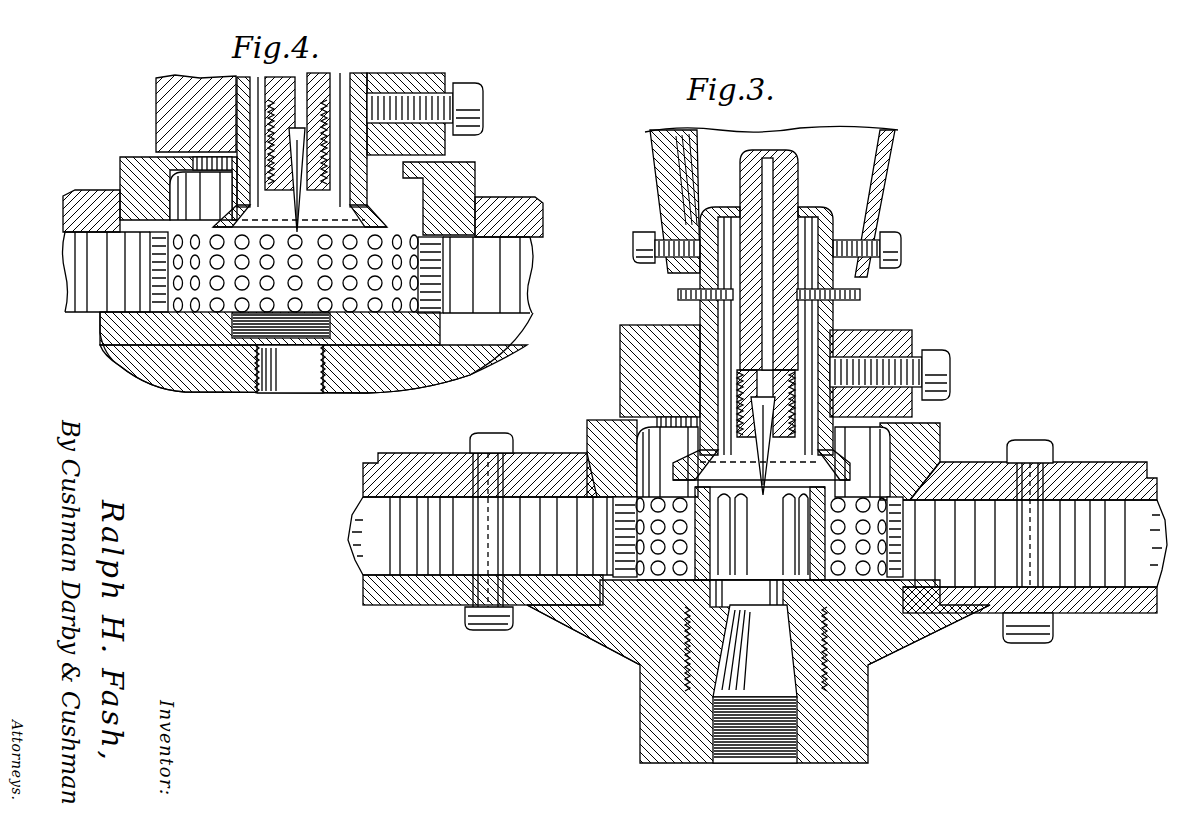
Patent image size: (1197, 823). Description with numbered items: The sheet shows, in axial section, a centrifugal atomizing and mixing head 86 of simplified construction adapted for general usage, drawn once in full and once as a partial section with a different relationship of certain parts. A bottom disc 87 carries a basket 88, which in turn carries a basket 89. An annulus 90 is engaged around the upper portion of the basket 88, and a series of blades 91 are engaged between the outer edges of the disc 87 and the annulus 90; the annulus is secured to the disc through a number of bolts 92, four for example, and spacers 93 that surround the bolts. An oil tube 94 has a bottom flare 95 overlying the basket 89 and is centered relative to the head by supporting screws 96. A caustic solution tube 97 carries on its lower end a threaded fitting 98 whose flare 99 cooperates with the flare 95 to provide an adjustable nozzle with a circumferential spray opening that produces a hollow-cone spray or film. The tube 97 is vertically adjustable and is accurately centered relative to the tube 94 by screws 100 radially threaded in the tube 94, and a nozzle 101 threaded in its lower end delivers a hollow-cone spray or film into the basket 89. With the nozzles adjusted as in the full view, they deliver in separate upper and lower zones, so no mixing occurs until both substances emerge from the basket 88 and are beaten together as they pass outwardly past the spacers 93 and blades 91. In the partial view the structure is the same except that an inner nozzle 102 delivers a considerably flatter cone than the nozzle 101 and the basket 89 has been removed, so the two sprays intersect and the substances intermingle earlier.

In FIG. 4, the head 86 is at (170, 388).
In FIG. 3, the head 86 is at (922, 655).
In FIG. 4, the bottom disc 87 is at (133, 332).
In FIG. 3, the bottom disc 87 is at (577, 602).
In FIG. 4, the basket 88 is at (475, 168).
In FIG. 3, the basket 88 is at (917, 448).
In FIG. 3, the basket 89 is at (733, 627).
In FIG. 4, the annulus 90 is at (540, 197).
In FIG. 3, the annulus 90 is at (1073, 463).
In FIG. 4, the blades 91 is at (500, 280).
In FIG. 3, the blades 91 is at (358, 540).
In FIG. 3, the bolts 92 is at (477, 613).
In FIG. 3, the spacers 93 is at (472, 563).
In FIG. 4, the oil tube 94 is at (353, 180).
In FIG. 3, the oil tube 94 is at (833, 323).
In FIG. 4, the bottom flare 95 is at (228, 213).
In FIG. 3, the bottom flare 95 is at (637, 455).
In FIG. 3, the supporting screws 96 is at (888, 238).
In FIG. 4, the caustic solution tube 97 is at (328, 88).
In FIG. 3, the caustic solution tube 97 is at (787, 188).
In FIG. 3, the fitting 98 is at (915, 335).
In FIG. 4, the flare 99 is at (247, 216).
In FIG. 3, the flare 99 is at (709, 466).
In FIG. 3, the screws 100 is at (860, 291).
In FIG. 3, the nozzle 101 is at (813, 466).
In FIG. 4, the inner nozzle 102 is at (346, 217).